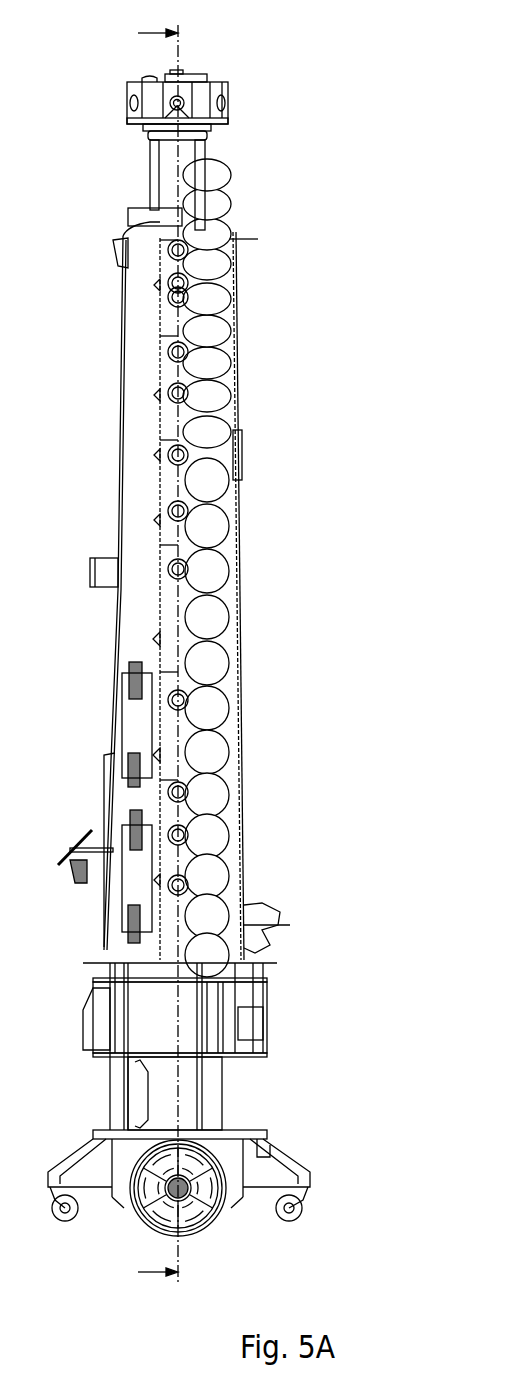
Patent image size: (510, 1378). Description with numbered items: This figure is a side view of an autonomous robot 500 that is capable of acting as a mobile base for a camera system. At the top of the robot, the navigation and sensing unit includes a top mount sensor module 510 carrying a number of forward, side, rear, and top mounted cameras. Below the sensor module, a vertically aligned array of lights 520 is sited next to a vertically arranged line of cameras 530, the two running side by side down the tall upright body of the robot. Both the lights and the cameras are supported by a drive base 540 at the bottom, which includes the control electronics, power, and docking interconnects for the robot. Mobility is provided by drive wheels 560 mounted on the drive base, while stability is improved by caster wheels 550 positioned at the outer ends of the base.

The autonomous robot 500 is at (279, 642).
The top mount sensor module 510 is at (509, 95).
The vertically aligned array of lights 520 is at (191, 568).
The vertically arranged line of cameras 530 is at (238, 835).
The drive base 540 is at (479, 1037).
The caster wheels 550 is at (509, 1192).
The drive wheels 560 is at (236, 1238).